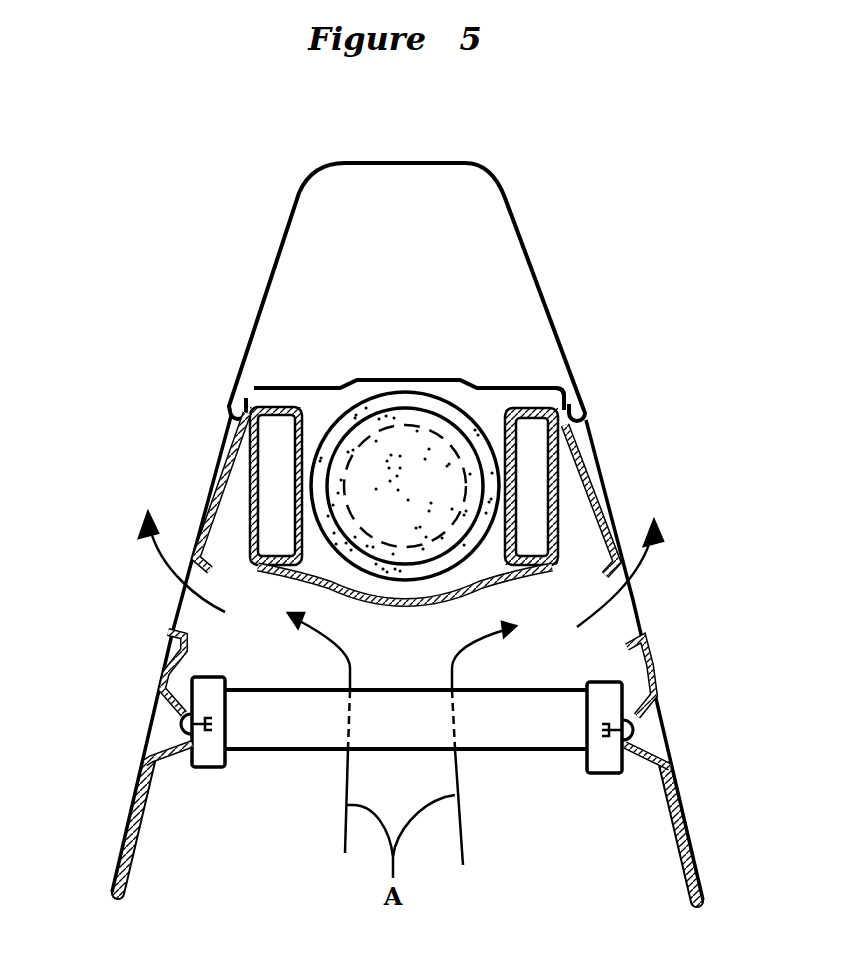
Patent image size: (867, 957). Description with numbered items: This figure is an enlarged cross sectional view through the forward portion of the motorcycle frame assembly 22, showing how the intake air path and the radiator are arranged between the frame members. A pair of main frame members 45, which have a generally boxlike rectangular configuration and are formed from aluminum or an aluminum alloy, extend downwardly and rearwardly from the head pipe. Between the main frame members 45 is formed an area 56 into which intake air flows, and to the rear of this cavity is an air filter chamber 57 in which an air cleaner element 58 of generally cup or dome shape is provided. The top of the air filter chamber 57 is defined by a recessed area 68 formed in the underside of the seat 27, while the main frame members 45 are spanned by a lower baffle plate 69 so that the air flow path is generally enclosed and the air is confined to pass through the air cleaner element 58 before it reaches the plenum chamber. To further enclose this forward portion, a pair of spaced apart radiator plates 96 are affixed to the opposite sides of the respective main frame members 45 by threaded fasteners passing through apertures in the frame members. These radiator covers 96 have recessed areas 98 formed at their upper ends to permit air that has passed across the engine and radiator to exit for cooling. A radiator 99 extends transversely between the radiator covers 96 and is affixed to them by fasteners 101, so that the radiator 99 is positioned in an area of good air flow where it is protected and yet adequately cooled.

The seat 27 is at (508, 202).
The recessed area 68 is at (527, 390).
The area 56 is at (360, 382).
The air filter chamber 57 is at (320, 403).
The air cleaner element 58 is at (405, 393).
The frame assembly 22 is at (533, 384).
The main frame members 45 is at (252, 478).
The recessed areas 98 is at (174, 634).
The fasteners 101 is at (181, 722).
The radiator plates 96 is at (115, 837).
The lower baffle plate 69 is at (432, 611).
The radiator 99 is at (540, 733).